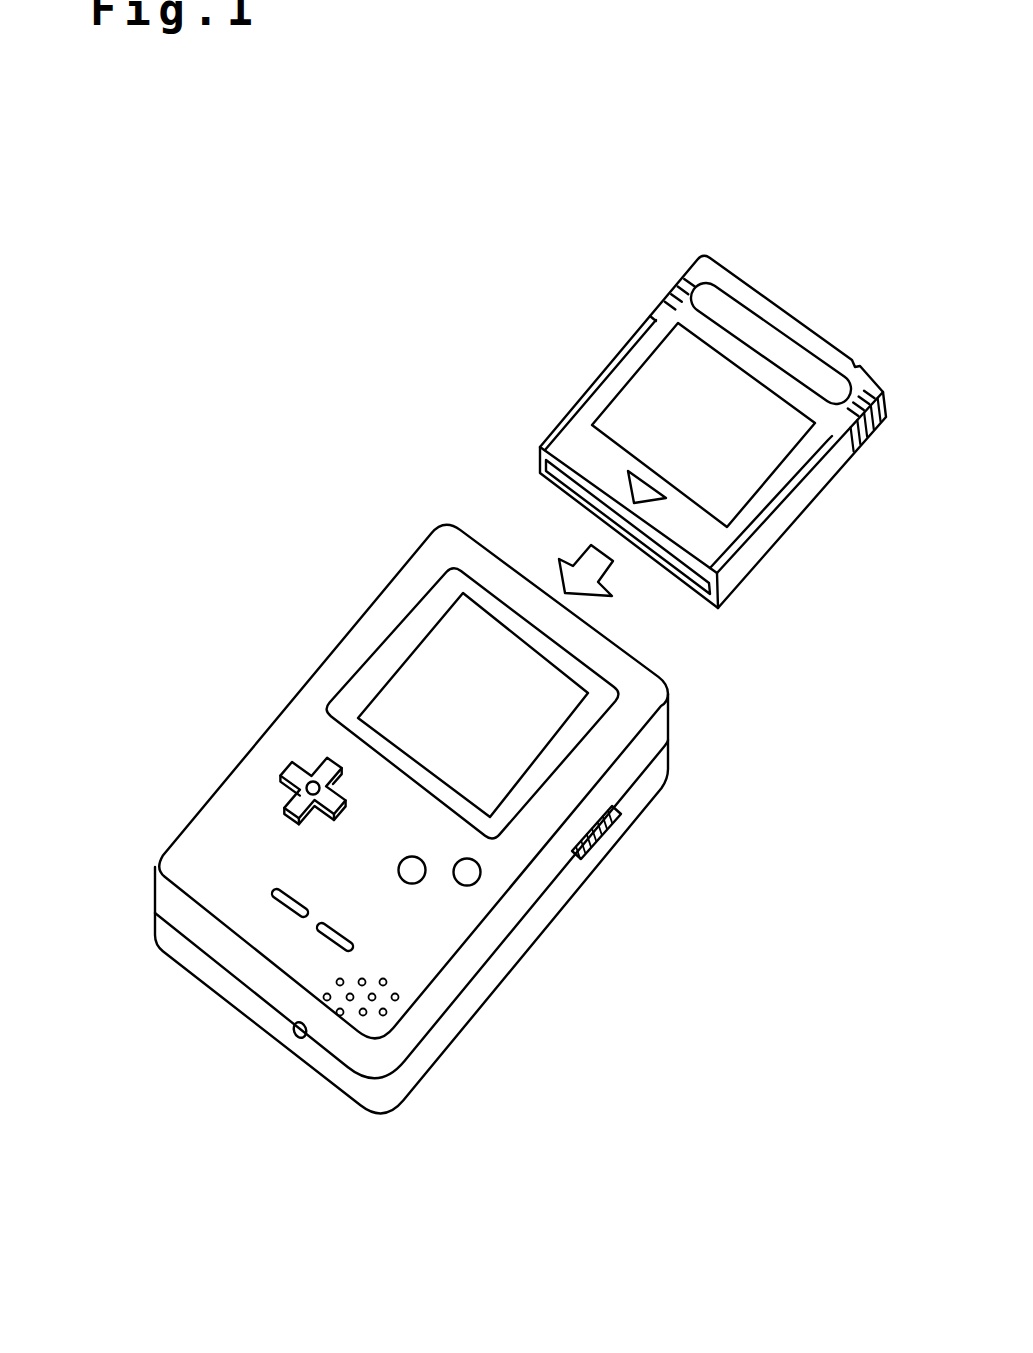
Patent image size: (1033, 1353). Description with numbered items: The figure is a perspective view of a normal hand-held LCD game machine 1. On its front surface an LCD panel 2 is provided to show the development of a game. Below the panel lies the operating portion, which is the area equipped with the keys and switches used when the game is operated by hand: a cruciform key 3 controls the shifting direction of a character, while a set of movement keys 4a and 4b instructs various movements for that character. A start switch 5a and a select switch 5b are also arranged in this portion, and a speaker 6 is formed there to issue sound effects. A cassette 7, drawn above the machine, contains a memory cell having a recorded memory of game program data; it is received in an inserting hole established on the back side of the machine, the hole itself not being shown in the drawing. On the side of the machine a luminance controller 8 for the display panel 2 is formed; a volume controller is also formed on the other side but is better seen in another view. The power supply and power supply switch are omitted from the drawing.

The hand-held LCD game machine 1 is at (286, 548).
The LCD panel 2 is at (556, 706).
The cruciform key 3 is at (288, 768).
The movement key 4a is at (470, 870).
The movement key 4b is at (410, 875).
The start switch 5a is at (283, 912).
The select switch 5b is at (322, 937).
The speaker 6 is at (387, 1000).
The cassette 7 is at (798, 320).
The luminance controller 8 is at (617, 827).